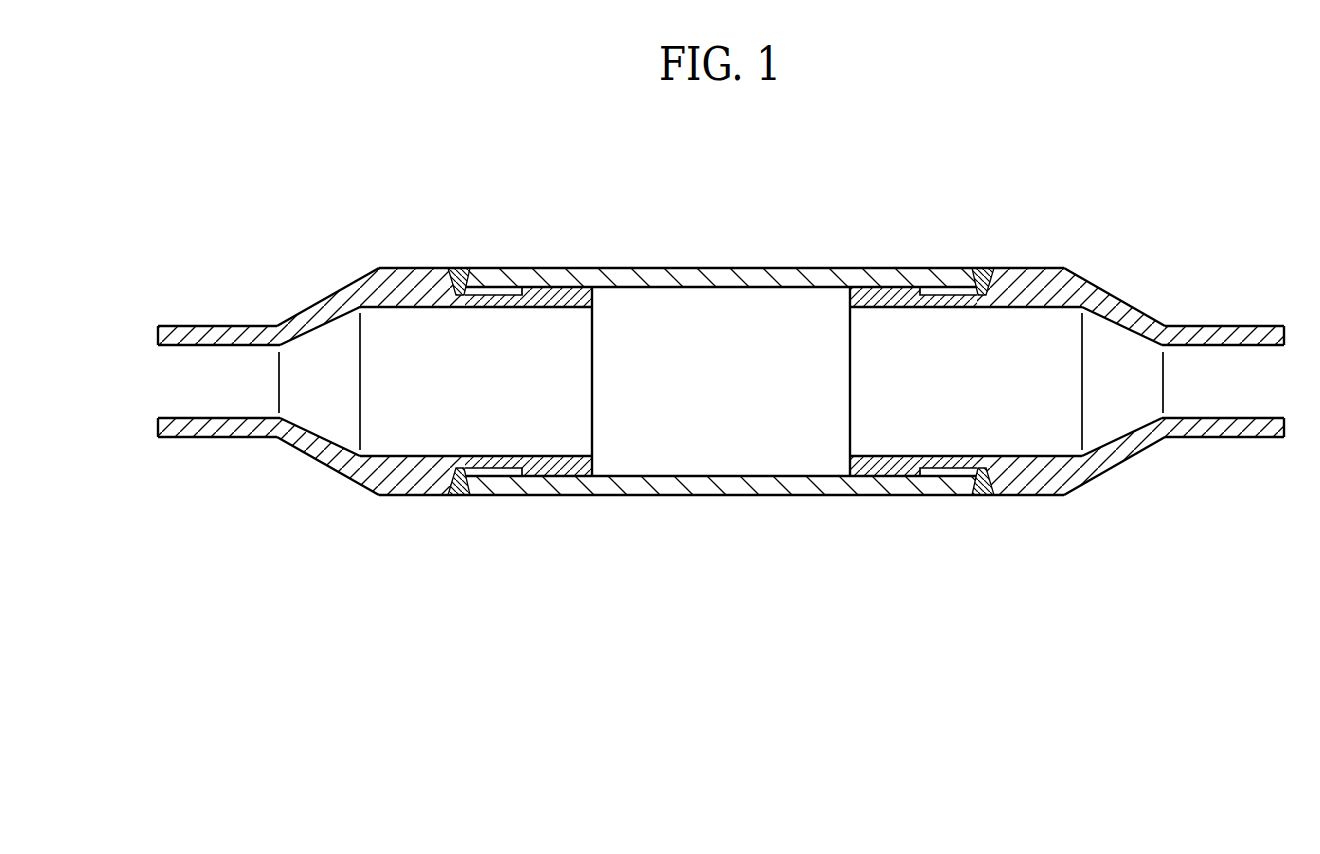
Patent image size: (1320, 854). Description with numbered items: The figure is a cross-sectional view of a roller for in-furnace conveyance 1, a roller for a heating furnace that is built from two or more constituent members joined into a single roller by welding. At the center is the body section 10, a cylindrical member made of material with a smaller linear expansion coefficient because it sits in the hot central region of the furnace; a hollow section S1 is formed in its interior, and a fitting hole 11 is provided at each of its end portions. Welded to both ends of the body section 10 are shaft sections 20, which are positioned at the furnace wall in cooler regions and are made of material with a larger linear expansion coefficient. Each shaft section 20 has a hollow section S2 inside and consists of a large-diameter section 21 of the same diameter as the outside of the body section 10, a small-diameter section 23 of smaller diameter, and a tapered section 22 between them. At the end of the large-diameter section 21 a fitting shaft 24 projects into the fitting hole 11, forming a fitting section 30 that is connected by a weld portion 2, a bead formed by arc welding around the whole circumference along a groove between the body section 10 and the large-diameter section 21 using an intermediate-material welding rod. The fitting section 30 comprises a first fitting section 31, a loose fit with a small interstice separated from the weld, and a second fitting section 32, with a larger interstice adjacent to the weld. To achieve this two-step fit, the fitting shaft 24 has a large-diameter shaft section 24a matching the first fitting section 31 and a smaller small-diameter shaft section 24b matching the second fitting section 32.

The roller for in-furnace conveyance 1 is at (146, 259).
The weld portion 2 is at (460, 268).
The body section 10 is at (719, 268).
The fitting hole 11 is at (574, 300).
The shaft section 20 is at (315, 318).
The large-diameter section 21 is at (402, 263).
The tapered section 22 is at (337, 280).
The small-diameter section 23 is at (212, 320).
The fitting shaft 24 is at (573, 300).
The large-diameter shaft section 24a is at (584, 280).
The small-diameter shaft section 24b is at (511, 287).
The fitting section 30 is at (721, 308).
The first fitting section 31 is at (721, 330).
The second fitting section 32 is at (480, 280).
The hollow section S1 is at (704, 398).
The hollow section S2 is at (401, 398).